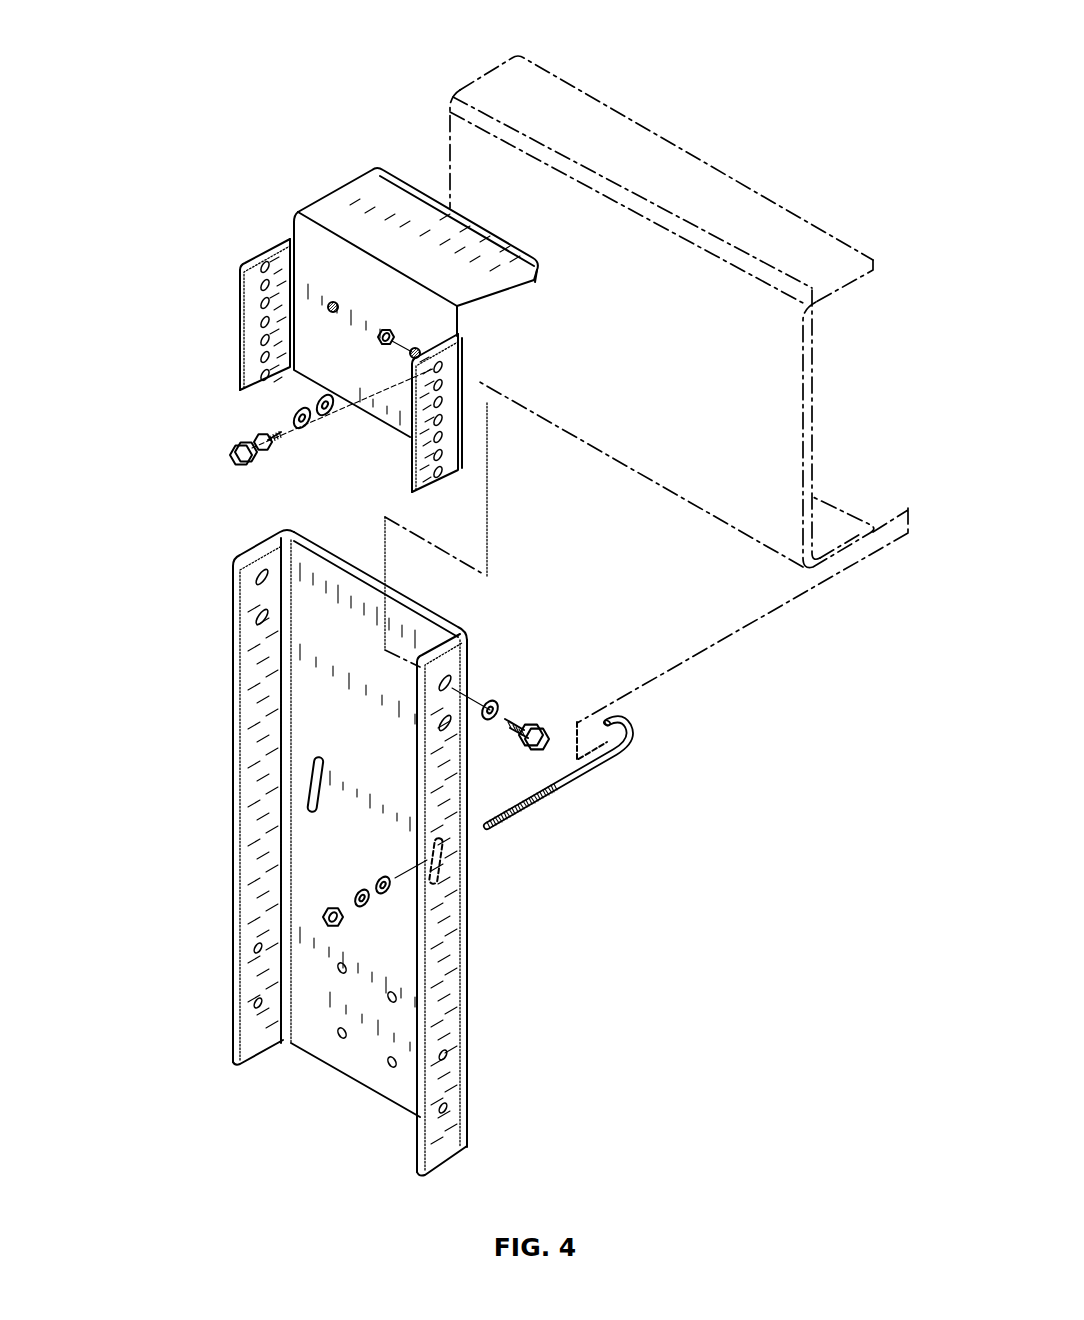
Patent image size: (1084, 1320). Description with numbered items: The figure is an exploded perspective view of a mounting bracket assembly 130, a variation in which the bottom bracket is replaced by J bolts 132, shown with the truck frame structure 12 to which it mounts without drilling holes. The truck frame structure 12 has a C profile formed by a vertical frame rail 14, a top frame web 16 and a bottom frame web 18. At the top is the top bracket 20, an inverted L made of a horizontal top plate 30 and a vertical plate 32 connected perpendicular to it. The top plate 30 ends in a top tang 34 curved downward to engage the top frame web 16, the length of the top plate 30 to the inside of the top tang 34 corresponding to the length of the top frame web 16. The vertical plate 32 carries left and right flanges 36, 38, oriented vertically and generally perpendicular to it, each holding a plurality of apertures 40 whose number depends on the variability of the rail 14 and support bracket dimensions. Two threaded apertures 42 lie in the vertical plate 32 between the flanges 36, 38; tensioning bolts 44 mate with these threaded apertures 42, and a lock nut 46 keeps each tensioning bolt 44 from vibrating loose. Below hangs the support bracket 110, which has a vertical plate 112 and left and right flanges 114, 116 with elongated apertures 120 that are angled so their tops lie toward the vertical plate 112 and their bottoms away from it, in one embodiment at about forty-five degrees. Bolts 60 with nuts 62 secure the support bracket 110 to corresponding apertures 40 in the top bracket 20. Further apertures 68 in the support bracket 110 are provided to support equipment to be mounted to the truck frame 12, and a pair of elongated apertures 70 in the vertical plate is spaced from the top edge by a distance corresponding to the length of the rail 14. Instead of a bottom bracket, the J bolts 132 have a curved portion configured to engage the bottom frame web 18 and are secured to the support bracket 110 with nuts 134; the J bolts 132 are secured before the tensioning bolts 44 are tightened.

The truck frame structure 12 is at (648, 408).
The vertical frame rail 14 is at (813, 395).
The top frame web 16 is at (830, 296).
The bottom frame web 18 is at (838, 513).
The top bracket 20 is at (282, 185).
The top plate 30 is at (414, 220).
The vertical plate 32 is at (314, 369).
The top tang 34 is at (538, 260).
The left flange 36 is at (266, 250).
The right flange 38 is at (445, 346).
The apertures 40 is at (262, 322).
The threaded apertures 42 is at (417, 349).
The tensioning bolt 44 is at (233, 457).
The lock nut 46 is at (257, 436).
The nut 62 is at (383, 330).
The bolt 60 is at (545, 731).
The apertures 68 is at (257, 1002).
The elongated apertures 70 is at (319, 772).
The support bracket 110 is at (190, 641).
The vertical plate 112 is at (312, 669).
The left flange 114 is at (282, 539).
The right flange 116 is at (448, 645).
The elongated apertures 120 is at (258, 619).
The mounting bracket assembly 130 is at (198, 47).
The J bolts 132 is at (597, 770).
The nuts 134 is at (331, 906).